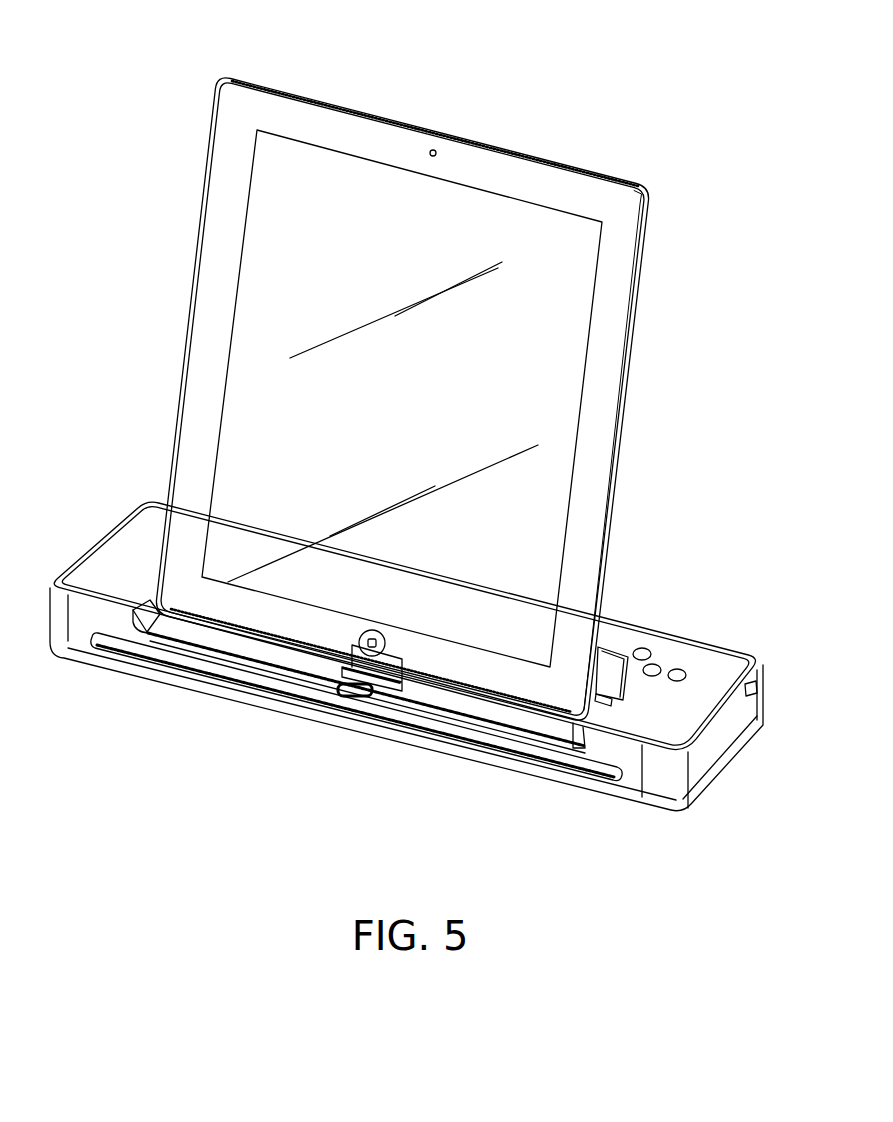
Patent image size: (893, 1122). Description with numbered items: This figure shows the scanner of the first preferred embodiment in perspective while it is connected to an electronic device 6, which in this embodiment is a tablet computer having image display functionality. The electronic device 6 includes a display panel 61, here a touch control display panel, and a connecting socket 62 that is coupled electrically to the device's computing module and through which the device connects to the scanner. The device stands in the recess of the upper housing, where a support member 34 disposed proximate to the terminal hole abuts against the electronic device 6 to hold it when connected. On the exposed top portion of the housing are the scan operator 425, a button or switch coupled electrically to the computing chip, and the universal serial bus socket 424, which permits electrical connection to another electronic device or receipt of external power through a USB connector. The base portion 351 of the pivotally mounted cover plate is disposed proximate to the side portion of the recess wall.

The electronic device 6 is at (660, 195).
The display panel 61 is at (495, 208).
The connecting socket 62 is at (405, 664).
The support member 34 is at (612, 648).
The scan operator 425 is at (677, 670).
The universal serial bus (USB) socket 424 is at (736, 683).
The base portion 351 is at (603, 681).